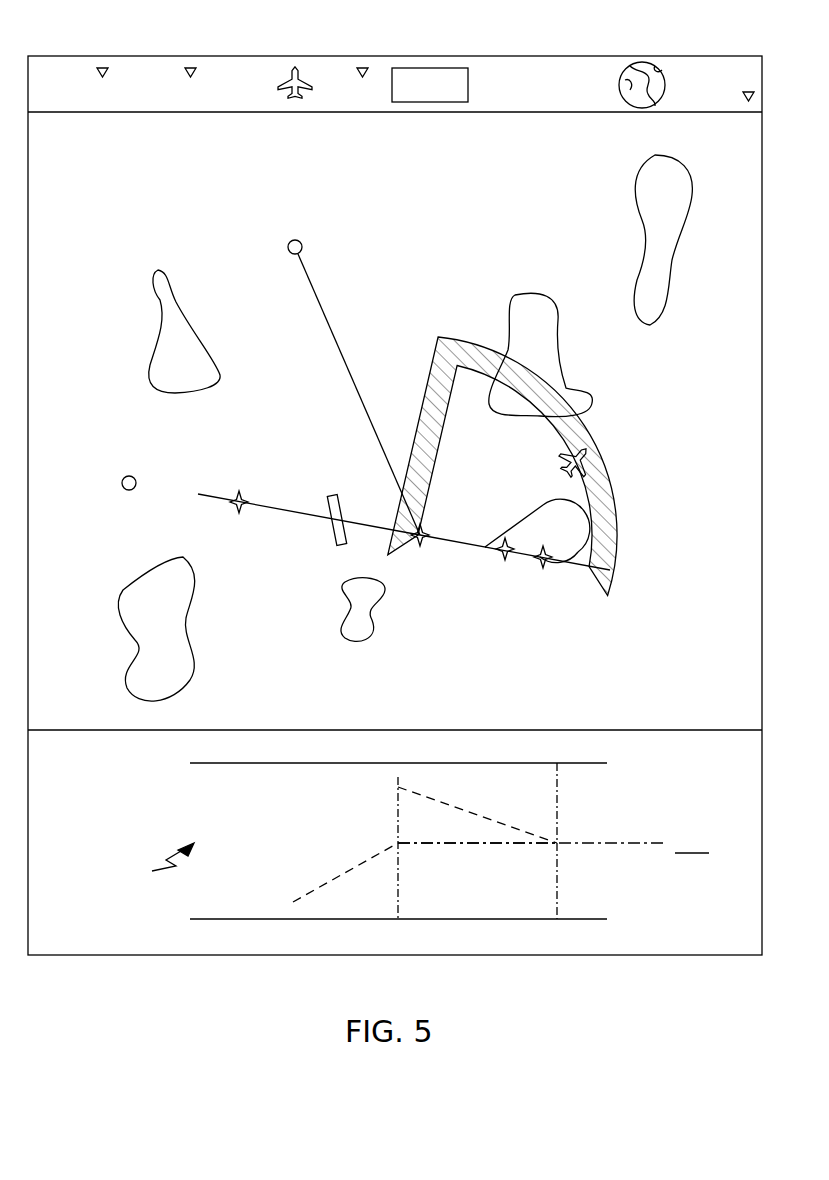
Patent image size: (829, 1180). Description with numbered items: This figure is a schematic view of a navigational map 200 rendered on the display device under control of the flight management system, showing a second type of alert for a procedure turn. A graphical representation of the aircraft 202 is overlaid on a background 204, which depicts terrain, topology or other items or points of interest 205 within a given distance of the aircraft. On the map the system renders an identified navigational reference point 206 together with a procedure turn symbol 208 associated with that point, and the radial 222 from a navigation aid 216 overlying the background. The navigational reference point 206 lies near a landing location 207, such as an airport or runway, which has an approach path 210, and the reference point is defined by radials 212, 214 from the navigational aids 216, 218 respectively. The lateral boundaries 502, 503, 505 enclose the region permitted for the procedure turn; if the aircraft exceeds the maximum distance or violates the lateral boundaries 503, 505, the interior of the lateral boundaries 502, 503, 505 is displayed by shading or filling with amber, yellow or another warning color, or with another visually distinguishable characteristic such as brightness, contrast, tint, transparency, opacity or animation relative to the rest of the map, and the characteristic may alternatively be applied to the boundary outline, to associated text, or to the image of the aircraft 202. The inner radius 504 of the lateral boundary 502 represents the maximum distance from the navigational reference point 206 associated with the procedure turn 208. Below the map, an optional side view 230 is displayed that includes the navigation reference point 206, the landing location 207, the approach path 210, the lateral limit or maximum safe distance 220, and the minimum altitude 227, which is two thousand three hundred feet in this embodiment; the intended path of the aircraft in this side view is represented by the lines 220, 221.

The navigational map 200 is at (172, 56).
The aircraft 202 is at (592, 456).
The background 204 is at (110, 159).
The points of interest 205 is at (631, 221).
The navigational reference point 206 is at (412, 548).
The landing location 207 is at (342, 545).
The procedure turn symbol 208 is at (590, 530).
The approach path 210 is at (377, 525).
The radial 212 is at (290, 514).
The radial 214 is at (310, 282).
The navigation aid 216 is at (128, 475).
The navigational aid 218 is at (293, 240).
The lateral limit 220 is at (495, 824).
The intended path line 221 is at (503, 846).
The radial 222 is at (588, 576).
The minimum altitude 227 is at (690, 858).
The side view 230 is at (147, 864).
The lateral boundary 502 is at (470, 360).
The lateral boundary 503 is at (432, 382).
The inner radius 504 is at (556, 438).
The lateral boundary 505 is at (516, 576).